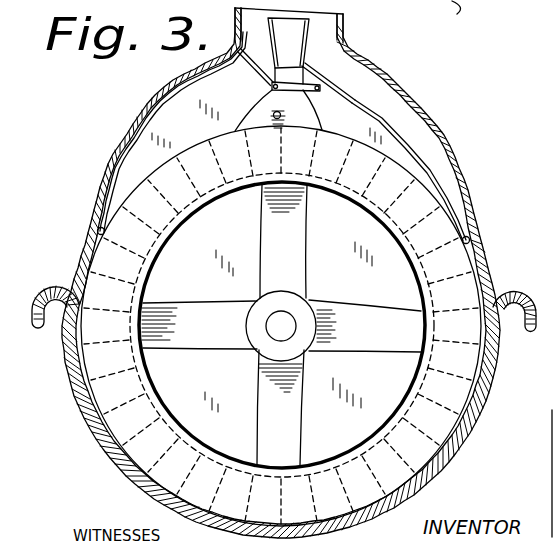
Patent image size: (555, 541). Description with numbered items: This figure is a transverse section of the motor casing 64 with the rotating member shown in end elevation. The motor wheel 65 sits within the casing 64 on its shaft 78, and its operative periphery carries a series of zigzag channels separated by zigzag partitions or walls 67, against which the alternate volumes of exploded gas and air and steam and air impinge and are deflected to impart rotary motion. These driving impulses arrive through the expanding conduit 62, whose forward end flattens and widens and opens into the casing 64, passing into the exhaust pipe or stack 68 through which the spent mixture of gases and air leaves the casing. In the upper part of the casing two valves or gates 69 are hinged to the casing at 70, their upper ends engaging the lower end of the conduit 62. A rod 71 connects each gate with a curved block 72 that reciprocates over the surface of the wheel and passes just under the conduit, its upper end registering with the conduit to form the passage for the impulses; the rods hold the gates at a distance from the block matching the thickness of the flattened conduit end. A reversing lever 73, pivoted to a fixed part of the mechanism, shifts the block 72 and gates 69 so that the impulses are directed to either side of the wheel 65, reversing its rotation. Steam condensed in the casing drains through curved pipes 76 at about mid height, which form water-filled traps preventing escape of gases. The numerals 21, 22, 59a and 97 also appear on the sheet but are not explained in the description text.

The expanding conduit 62 is at (288, 51).
The casing 64 is at (88, 250).
The motor wheel 65 is at (390, 205).
The zigzag partitions or walls 67 is at (108, 415).
The exhaust pipe or stack 68 is at (347, 28).
The valves or gates 69 is at (227, 48).
The hinge 70 is at (98, 228).
The rod 71 is at (256, 75).
The block 72 is at (292, 97).
The reversing lever 73 is at (276, 120).
The pipes 76 is at (55, 321).
The shaft of the wheel 78 is at (281, 326).
The element 21 is at (492, 7).
The element 22 is at (428, 10).
The element 59a is at (459, 34).
The element 97 is at (543, 13).